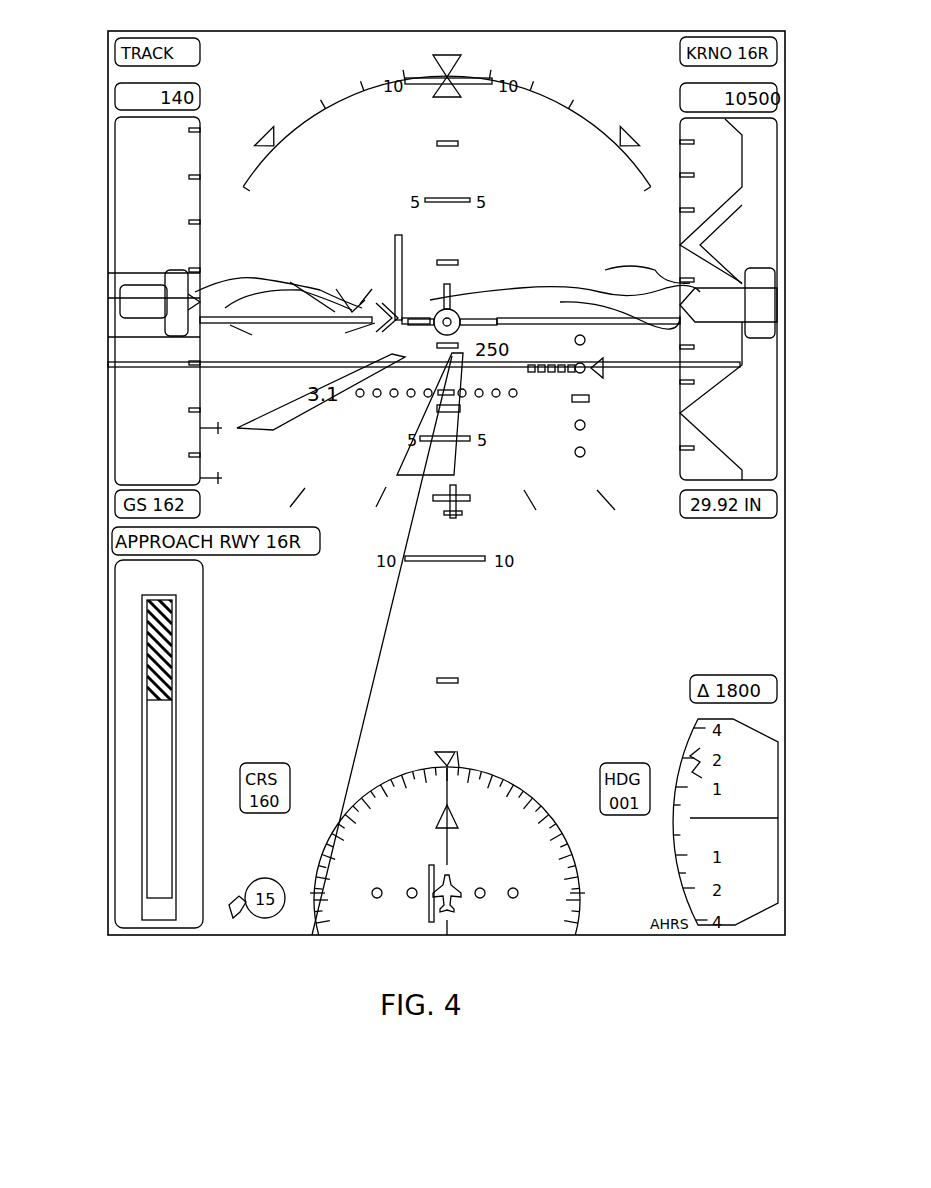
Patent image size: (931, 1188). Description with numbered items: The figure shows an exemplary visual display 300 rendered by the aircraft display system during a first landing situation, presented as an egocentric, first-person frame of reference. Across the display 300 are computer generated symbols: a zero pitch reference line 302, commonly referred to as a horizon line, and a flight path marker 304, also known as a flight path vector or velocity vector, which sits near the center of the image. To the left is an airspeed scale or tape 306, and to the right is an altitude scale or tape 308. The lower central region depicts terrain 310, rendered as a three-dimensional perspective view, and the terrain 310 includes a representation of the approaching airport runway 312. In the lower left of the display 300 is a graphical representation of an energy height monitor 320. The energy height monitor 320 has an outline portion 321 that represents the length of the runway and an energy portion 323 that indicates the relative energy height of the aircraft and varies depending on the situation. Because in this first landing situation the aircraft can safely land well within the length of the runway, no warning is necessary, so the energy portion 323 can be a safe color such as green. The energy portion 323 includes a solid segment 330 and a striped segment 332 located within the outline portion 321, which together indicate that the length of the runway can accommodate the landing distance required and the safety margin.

The visual display 300 is at (108, 300).
The zero pitch reference line 302 is at (612, 322).
The flight path marker 304 is at (458, 306).
The airspeed scale or tape 306 is at (201, 243).
The altitude scale or tape 308 is at (680, 230).
The terrain 310 is at (343, 498).
The approaching airport runway 312 is at (462, 458).
The energy height monitor 320 is at (164, 744).
The outline portion 321 is at (140, 912).
The energy portion 323 is at (212, 749).
The solid segment 330 is at (165, 845).
The striped segment 332 is at (165, 650).